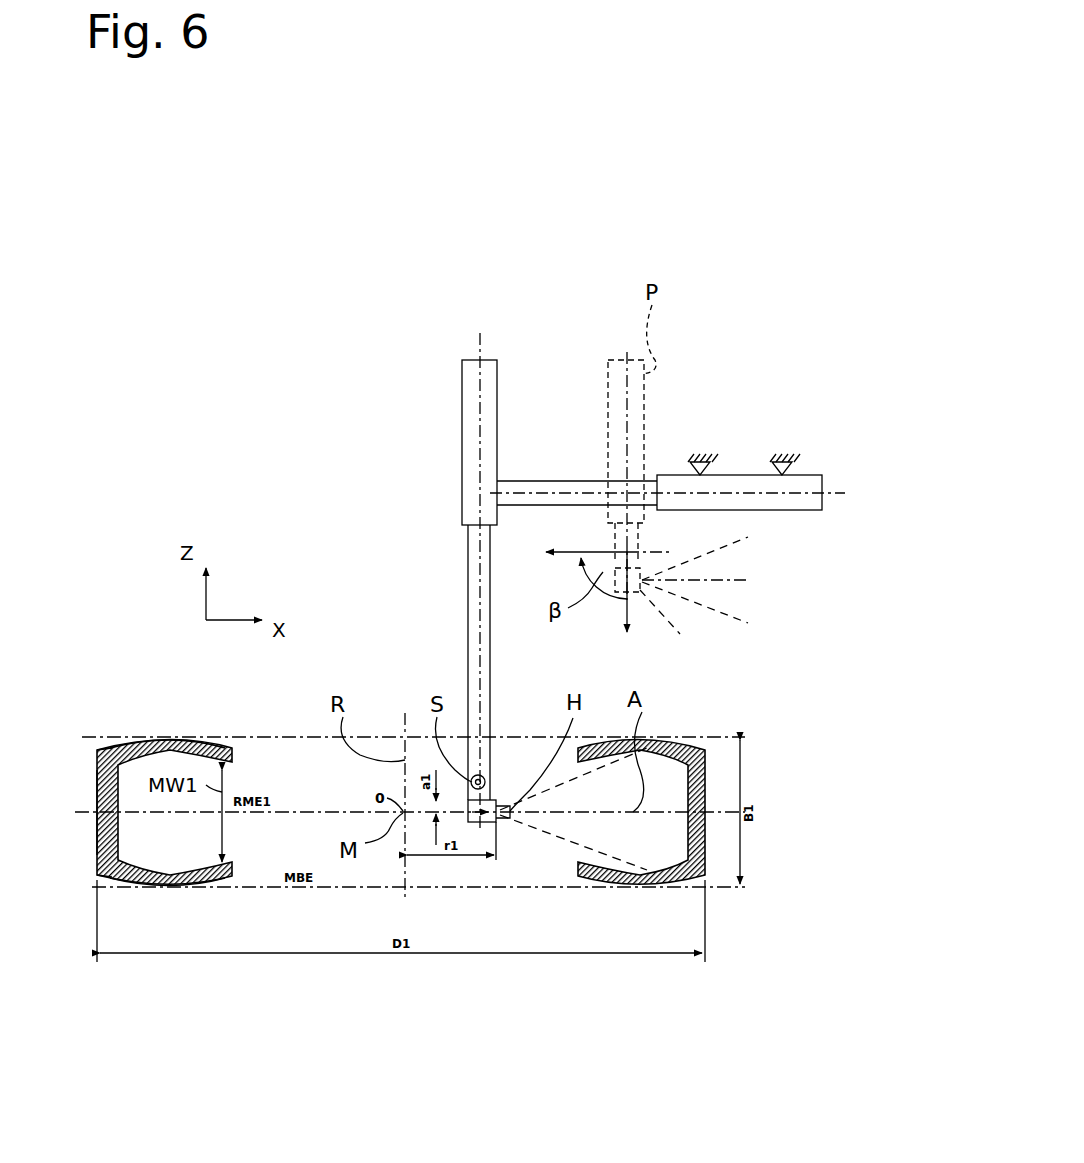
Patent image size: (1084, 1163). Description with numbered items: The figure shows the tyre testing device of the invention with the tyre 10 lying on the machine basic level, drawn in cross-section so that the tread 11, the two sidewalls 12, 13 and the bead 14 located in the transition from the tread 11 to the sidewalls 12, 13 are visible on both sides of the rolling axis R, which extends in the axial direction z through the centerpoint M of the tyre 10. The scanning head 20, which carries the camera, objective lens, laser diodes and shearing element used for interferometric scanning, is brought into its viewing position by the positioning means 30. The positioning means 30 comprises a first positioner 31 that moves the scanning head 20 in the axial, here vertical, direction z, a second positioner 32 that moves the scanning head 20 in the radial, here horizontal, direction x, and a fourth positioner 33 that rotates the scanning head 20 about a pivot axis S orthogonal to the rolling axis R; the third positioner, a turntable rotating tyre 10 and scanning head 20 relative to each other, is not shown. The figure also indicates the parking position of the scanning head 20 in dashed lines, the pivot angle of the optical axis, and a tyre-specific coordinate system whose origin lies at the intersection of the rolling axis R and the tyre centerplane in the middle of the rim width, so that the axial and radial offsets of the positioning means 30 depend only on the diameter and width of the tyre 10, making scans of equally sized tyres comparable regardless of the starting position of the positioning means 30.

The tyre 10 is at (94, 782).
The tread 11 is at (97, 846).
The sidewall 12 is at (170, 737).
The sidewall 13 is at (164, 887).
The bead 14 is at (108, 750).
The scanning head 20 is at (500, 822).
The positioning means 30 is at (748, 472).
The first positioner 31 is at (468, 555).
The second positioner 32 is at (548, 490).
The fourth positioner 33 is at (488, 797).